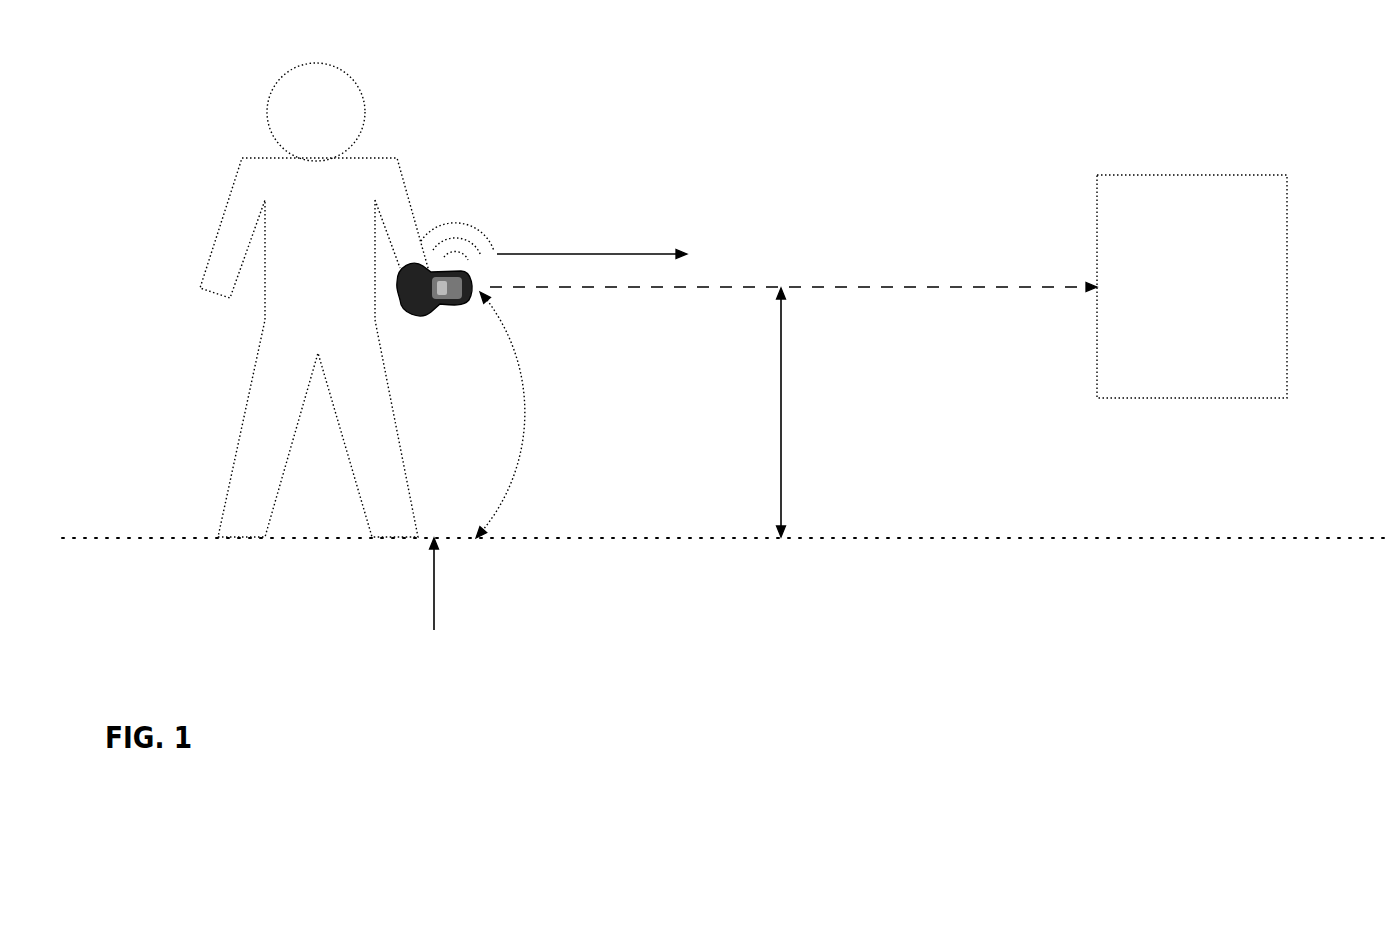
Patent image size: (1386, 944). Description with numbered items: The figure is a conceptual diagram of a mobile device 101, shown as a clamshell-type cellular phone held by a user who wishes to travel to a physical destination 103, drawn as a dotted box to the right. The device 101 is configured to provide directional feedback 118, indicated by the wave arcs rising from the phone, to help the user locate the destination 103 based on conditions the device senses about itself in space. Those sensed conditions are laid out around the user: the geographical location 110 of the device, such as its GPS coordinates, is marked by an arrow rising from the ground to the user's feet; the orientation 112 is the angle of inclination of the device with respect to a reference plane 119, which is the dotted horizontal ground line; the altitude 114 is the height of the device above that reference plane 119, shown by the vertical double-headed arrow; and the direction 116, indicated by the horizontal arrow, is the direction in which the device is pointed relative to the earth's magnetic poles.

The mobile device 101 is at (445, 318).
The physical destination 103 is at (1208, 311).
The geographical location 110 is at (452, 699).
The orientation 112 is at (617, 419).
The altitude 114 is at (893, 432).
The direction 116 is at (608, 242).
The directional feedback 118 is at (520, 187).
The reference plane 119 is at (870, 540).